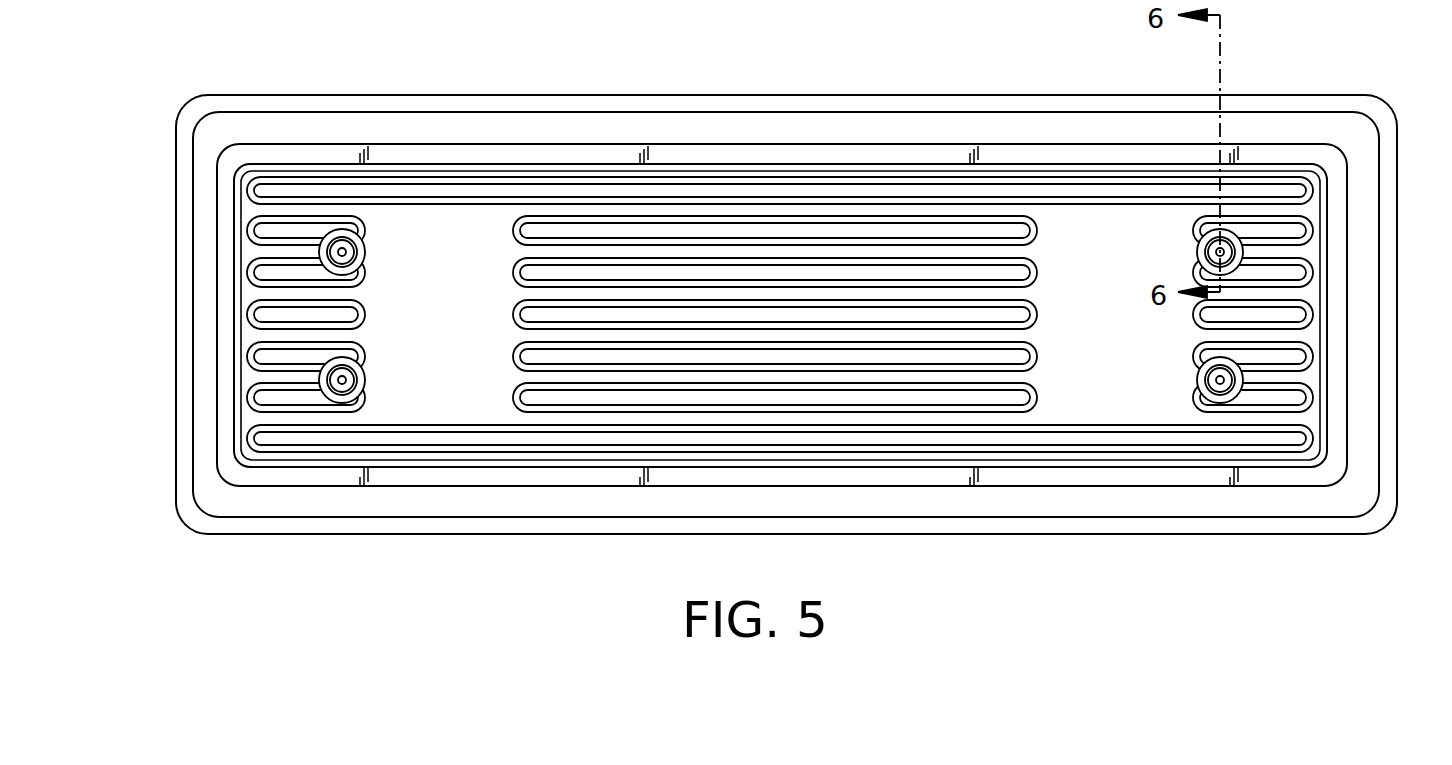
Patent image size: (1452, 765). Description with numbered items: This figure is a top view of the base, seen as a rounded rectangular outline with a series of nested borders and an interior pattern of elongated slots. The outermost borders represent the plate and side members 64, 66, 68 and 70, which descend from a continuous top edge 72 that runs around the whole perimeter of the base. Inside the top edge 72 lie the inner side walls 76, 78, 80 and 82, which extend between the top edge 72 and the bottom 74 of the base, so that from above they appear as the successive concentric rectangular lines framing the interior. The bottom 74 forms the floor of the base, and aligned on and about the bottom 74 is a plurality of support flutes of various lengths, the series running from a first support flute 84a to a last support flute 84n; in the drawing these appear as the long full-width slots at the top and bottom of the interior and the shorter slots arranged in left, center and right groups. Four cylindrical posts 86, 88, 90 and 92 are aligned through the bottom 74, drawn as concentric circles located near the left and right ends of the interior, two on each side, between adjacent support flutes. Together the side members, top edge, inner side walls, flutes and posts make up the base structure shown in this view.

The plate and side member 64 is at (182, 307).
The plate and side member 66 is at (788, 522).
The plate and side member 68 is at (1383, 425).
The plate and side member 70 is at (786, 108).
The continuous top edge 72 is at (553, 108).
The bottom 74 is at (1113, 325).
The inner side wall 76 is at (235, 240).
The inner side wall 78 is at (515, 465).
The inner side wall 80 is at (1328, 378).
The inner side wall 82 is at (1078, 165).
The support flute 84a is at (270, 452).
The support flute 84n is at (1290, 190).
The cylindrical post 86 is at (365, 252).
The cylindrical post 88 is at (360, 377).
The cylindrical post 90 is at (1200, 253).
The cylindrical post 92 is at (1200, 375).